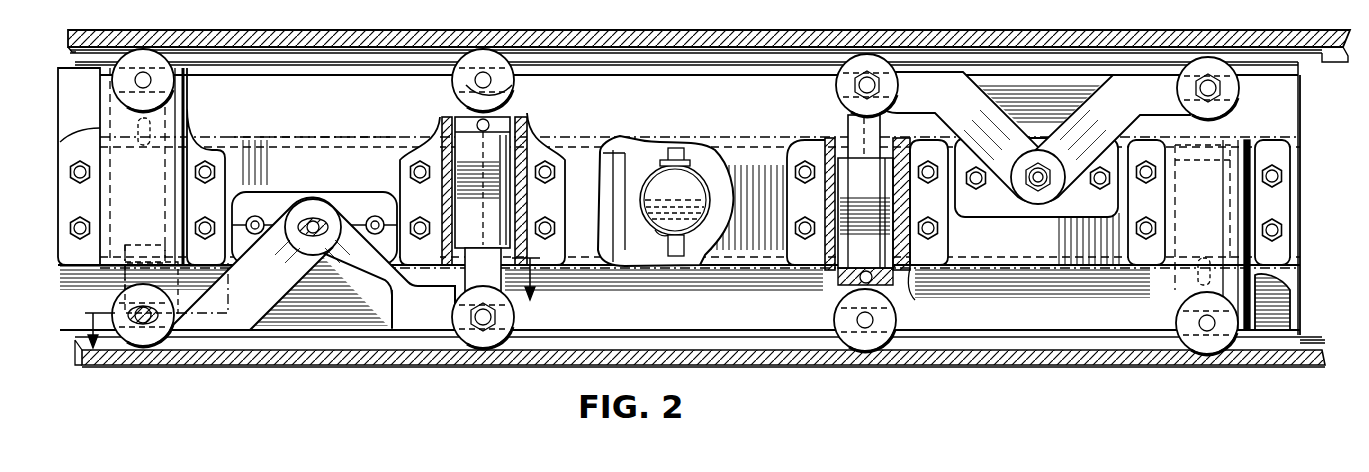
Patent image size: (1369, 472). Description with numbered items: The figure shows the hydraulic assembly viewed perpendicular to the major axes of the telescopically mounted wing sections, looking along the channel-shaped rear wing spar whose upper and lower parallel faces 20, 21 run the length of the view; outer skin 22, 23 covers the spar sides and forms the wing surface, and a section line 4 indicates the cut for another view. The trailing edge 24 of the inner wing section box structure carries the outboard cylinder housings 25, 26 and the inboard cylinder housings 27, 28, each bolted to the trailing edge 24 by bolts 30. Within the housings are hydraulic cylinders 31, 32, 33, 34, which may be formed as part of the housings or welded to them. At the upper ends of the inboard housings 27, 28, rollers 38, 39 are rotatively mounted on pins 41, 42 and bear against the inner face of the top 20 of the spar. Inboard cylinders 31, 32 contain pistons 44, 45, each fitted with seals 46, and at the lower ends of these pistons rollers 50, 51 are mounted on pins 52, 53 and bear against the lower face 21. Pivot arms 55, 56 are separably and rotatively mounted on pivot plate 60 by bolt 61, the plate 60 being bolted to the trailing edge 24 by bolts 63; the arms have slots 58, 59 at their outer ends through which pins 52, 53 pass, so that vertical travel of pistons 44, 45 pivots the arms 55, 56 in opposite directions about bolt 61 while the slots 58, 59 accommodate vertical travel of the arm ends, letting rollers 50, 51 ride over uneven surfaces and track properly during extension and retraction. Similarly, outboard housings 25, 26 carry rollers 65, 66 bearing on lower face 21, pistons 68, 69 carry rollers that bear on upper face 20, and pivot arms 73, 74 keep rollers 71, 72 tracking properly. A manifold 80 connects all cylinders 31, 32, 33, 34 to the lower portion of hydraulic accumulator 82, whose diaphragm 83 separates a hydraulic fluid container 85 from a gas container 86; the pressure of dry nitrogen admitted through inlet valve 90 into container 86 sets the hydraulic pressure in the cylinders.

The section line 4 is at (302, 306).
The upper face of rear wing spar 20 is at (648, 67).
The lower face of rear wing spar 21 is at (332, 358).
The outer skin 22 is at (798, 37).
The outer skin 23 is at (745, 368).
The trailing edge 24 is at (322, 175).
The outboard cylinder housing 25 is at (925, 270).
The outboard cylinder housing 26 is at (1272, 285).
The inboard cylinder housing 27 is at (195, 122).
The inboard cylinder housing 28 is at (538, 128).
The bolts 30 is at (211, 218).
The hydraulic cylinder 31 is at (112, 200).
The hydraulic cylinder 32 is at (440, 195).
The hydraulic cylinder 33 is at (826, 165).
The hydraulic cylinder 34 is at (1176, 230).
The roller 38 is at (72, 47).
The roller 39 is at (512, 52).
The pin 41 is at (112, 80).
The pin 42 is at (452, 80).
The piston 44 is at (152, 235).
The piston 45 is at (477, 242).
The seals 46 is at (486, 188).
The roller 50 is at (178, 350).
The roller 51 is at (516, 348).
The pin 52 is at (152, 312).
The pin 53 is at (418, 310).
The pivot arm 55 is at (260, 307).
The pivot arm 56 is at (357, 308).
The slot 58 is at (327, 243).
The slot 59 is at (1020, 193).
The pivot plate 60 is at (340, 195).
The bolt 61 is at (1052, 193).
The bolts 63 is at (252, 218).
The roller 65 is at (890, 350).
The roller 66 is at (1232, 350).
The piston 68 is at (858, 183).
The piston 69 is at (1202, 193).
The roller 71 is at (888, 58).
The roller 72 is at (1240, 95).
The pivot arm 73 is at (970, 113).
The pivot arm 74 is at (1068, 120).
The manifold 80 is at (245, 137).
The hydraulic accumulator 82 is at (698, 262).
The diaphragm 83 is at (658, 190).
The container 85 is at (660, 230).
The container 86 is at (687, 197).
The inlet valve 90 is at (680, 147).